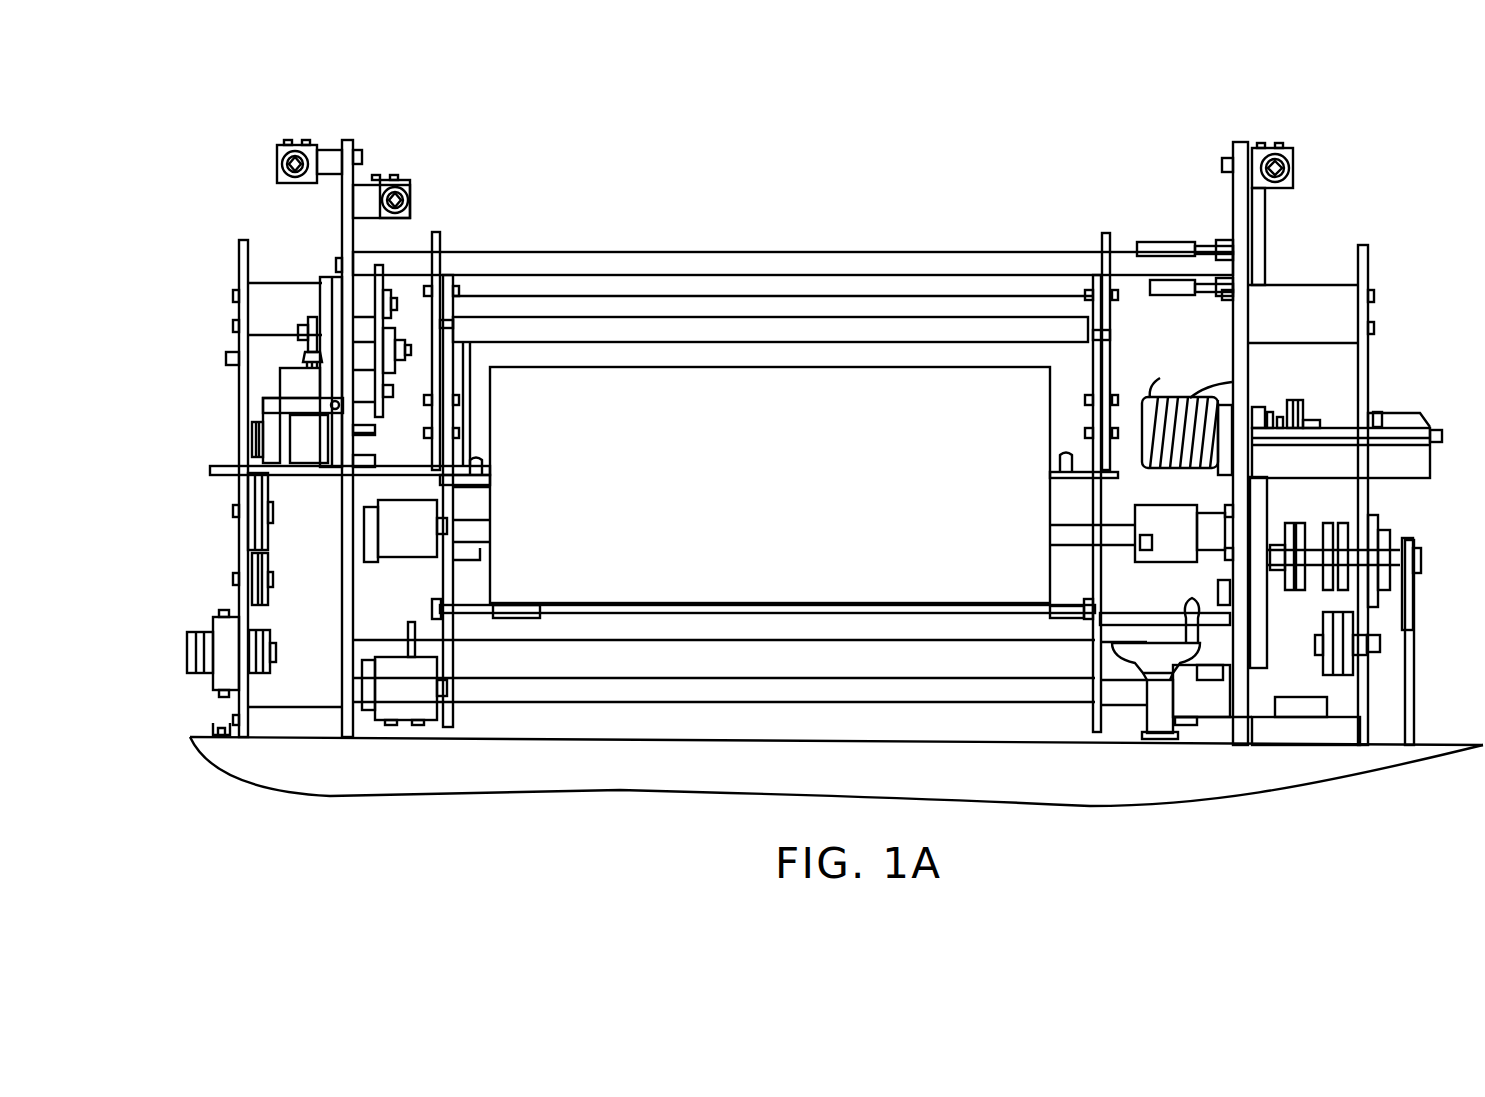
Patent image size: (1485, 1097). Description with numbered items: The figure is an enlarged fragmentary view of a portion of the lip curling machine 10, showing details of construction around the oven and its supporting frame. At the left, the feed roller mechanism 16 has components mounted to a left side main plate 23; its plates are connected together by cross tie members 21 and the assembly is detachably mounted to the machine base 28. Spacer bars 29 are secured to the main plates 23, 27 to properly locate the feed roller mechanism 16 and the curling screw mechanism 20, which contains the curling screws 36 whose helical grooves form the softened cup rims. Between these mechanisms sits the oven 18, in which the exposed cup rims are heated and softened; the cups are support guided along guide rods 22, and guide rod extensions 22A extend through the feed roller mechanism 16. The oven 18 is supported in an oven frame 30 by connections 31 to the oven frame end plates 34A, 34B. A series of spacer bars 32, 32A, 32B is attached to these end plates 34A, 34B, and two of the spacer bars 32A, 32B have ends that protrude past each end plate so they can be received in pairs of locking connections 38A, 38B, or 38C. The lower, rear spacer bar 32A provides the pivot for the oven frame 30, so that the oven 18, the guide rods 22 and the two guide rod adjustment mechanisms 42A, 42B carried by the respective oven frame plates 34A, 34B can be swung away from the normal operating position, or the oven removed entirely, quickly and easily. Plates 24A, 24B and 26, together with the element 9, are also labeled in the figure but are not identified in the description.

The coil 9 is at (1152, 395).
The lip curling machine 10 is at (850, 164).
The feed roller mechanism 16 is at (272, 150).
The oven 18 is at (752, 478).
The curling screw mechanism 20 is at (1366, 98).
The cross tie members 21 is at (252, 309).
The guide rods 22 is at (400, 463).
The guide rod extensions 22A is at (303, 473).
The left side main plate 23 is at (340, 243).
The left end plate 24A is at (236, 264).
The right end plate 24B is at (1367, 258).
The support plate 26 is at (1232, 196).
The main plate 27 is at (1282, 290).
The machine base 28 is at (1424, 743).
The spacer bars 29 is at (608, 256).
The oven frame 30 is at (662, 304).
The connections 31 is at (485, 626).
The spacer bars 32 is at (503, 325).
The spacer bar 32A is at (565, 694).
The spacer bar 32B is at (480, 558).
The oven frame end plate 34A is at (454, 299).
The oven frame end plate 34B is at (1084, 297).
The curling screws 36 is at (1196, 394).
The locking connection 38A is at (408, 498).
The locking connection 38B is at (385, 660).
The locking connection 38C is at (1148, 244).
The guide rod adjustment mechanism 42A is at (427, 316).
The guide rod adjustment mechanism 42B is at (1107, 349).